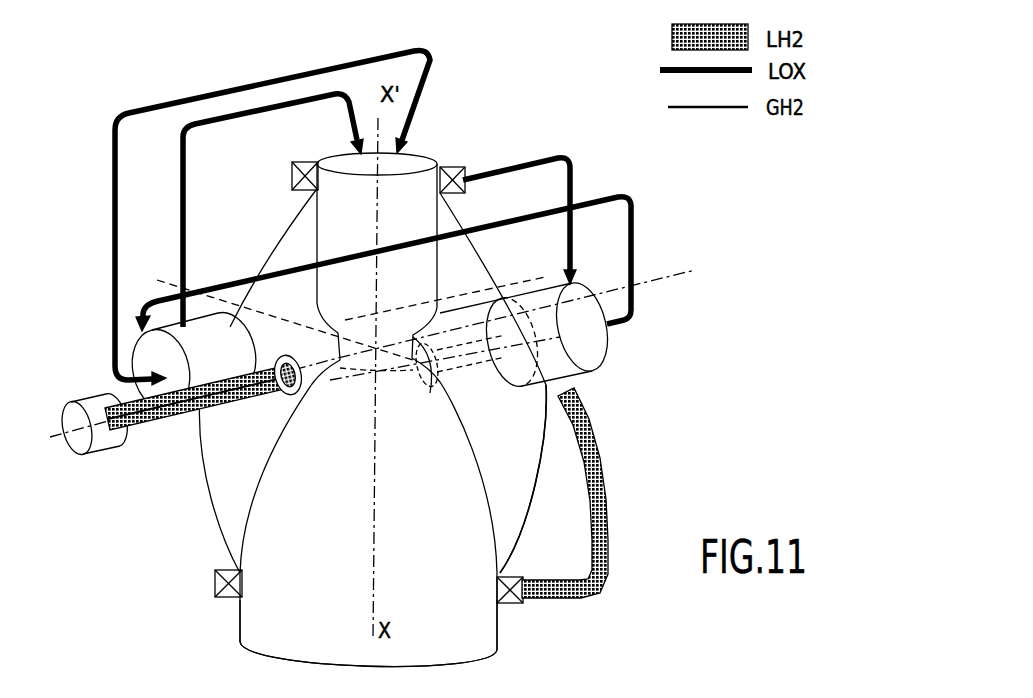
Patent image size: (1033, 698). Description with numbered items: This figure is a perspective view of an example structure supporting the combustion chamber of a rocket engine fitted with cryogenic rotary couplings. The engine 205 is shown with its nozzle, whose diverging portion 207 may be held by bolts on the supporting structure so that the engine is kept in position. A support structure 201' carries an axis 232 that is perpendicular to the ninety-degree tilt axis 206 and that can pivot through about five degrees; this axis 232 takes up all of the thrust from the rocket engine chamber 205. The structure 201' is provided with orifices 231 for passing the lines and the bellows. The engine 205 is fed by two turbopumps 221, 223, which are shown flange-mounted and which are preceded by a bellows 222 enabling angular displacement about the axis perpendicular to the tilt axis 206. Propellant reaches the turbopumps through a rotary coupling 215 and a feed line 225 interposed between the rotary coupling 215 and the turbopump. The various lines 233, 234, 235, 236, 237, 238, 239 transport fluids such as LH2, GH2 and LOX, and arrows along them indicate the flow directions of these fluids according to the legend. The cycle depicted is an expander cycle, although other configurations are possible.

The engine 205 is at (490, 508).
The support structure 201' is at (538, 479).
The diverging portion of the engine nozzle 207 is at (498, 627).
The tilt axis 206 is at (683, 270).
The rotary coupling 215 is at (93, 407).
The turbopump 221 is at (595, 348).
The bellows 222 is at (449, 406).
The turbopump 223 is at (140, 357).
The feed line 225 is at (143, 420).
The orifice 231 is at (283, 405).
The axis 232 is at (593, 420).
The line 233 is at (633, 248).
The line 234 is at (193, 97).
The line 235 is at (527, 157).
The line 236 is at (188, 232).
The line 237 is at (577, 597).
The line 238 is at (217, 583).
The line 239 is at (452, 162).